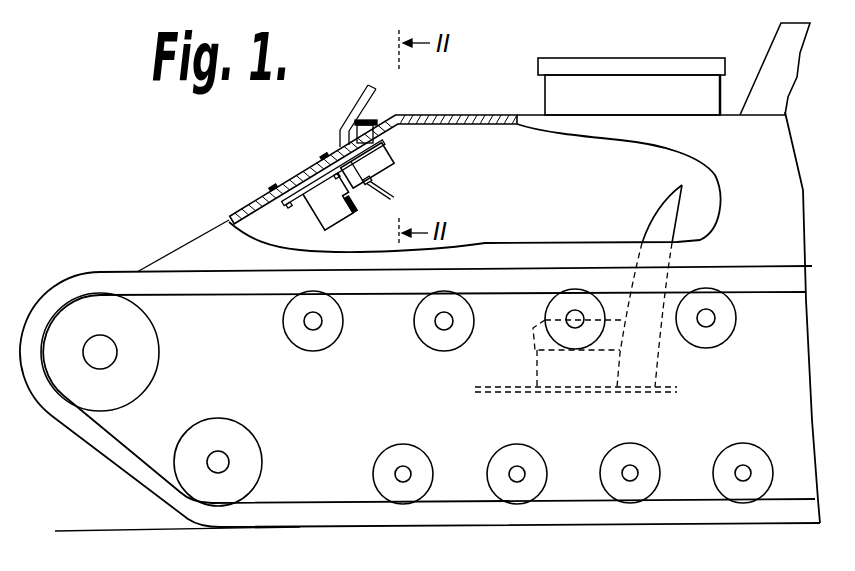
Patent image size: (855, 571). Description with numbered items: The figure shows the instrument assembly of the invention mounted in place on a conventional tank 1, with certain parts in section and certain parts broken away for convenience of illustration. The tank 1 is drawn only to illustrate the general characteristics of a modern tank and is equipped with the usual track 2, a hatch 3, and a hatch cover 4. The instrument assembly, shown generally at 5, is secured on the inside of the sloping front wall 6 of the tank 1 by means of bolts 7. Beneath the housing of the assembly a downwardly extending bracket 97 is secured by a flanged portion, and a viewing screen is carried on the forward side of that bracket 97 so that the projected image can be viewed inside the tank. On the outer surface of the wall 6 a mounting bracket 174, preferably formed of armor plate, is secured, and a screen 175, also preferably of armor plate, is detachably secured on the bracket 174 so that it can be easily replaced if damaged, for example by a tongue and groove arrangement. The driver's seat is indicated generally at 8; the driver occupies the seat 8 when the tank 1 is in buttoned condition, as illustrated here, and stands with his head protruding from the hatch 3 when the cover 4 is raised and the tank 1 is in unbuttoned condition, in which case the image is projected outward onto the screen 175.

The tank 1 is at (513, 97).
The track 2 is at (133, 487).
The hatch 3 is at (646, 106).
The hatch cover 4 is at (659, 58).
The instrument assembly 5 is at (307, 221).
The sloping front wall 6 is at (242, 208).
The bolts 7 is at (326, 156).
The driver's seat 8 is at (670, 202).
The downwardly extending bracket 97 is at (381, 197).
The mounting bracket 174 is at (359, 104).
The screen 175 is at (378, 103).